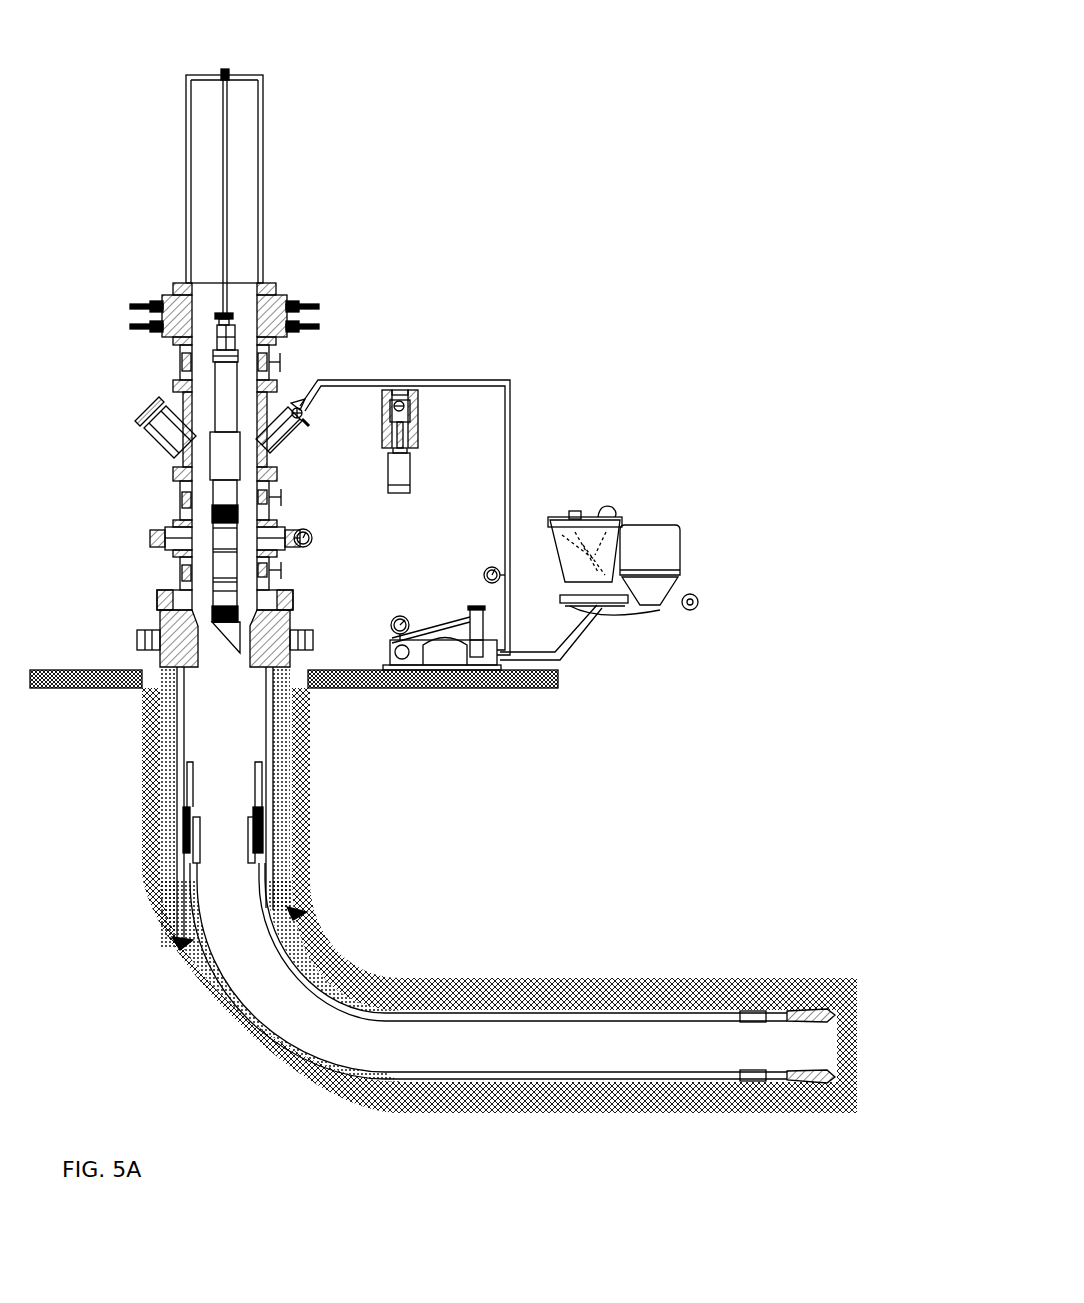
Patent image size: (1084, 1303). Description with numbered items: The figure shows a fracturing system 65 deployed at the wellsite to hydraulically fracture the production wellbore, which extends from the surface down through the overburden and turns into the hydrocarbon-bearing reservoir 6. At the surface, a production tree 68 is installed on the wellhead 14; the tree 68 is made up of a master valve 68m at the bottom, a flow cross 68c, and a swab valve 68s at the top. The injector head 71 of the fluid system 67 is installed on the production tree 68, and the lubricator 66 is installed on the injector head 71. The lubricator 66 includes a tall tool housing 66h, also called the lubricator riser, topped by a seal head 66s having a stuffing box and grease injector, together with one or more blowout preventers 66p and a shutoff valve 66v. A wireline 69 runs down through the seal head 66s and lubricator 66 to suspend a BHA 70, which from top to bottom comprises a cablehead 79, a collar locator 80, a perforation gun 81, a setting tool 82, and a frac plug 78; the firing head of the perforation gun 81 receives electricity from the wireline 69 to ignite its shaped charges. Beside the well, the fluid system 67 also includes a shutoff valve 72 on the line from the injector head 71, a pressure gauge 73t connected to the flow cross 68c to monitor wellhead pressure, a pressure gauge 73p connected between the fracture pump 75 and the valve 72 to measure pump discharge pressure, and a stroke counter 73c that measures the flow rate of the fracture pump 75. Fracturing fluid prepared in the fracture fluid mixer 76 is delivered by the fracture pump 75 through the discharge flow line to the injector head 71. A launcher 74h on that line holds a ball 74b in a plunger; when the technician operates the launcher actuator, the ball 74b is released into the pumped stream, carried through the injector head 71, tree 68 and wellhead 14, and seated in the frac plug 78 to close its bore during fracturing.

The fracturing system 65 is at (93, 65).
The lubricator 66 is at (338, 233).
The seal head 66s is at (234, 76).
The tool housing 66h is at (263, 230).
The blowout preventers 66p is at (283, 297).
The shutoff valve 66v is at (180, 362).
The wireline 69 is at (229, 136).
The fluid system 67 is at (609, 277).
The BHA 70 is at (324, 348).
The cablehead 79 is at (220, 320).
The collar locator 80 is at (236, 332).
The perforation gun 81 is at (238, 333).
The injector head 71 is at (162, 452).
The shutoff valve 72 is at (303, 421).
The pressure gauge 73t is at (313, 538).
The pressure gauge 73p is at (484, 573).
The stroke counter 73c is at (398, 616).
The ball 74b is at (402, 405).
The launcher 74h is at (410, 466).
The fracture pump 75 is at (440, 636).
The fracture fluid mixer 76 is at (654, 525).
The production tree 68 is at (82, 492).
The swab valve 68s is at (180, 500).
The flow cross 68c is at (165, 538).
The master valve 68m is at (180, 572).
The setting tool 82 is at (238, 465).
The frac plug 78 is at (226, 640).
The wellhead 14 is at (160, 640).
The reservoir 6 is at (527, 978).